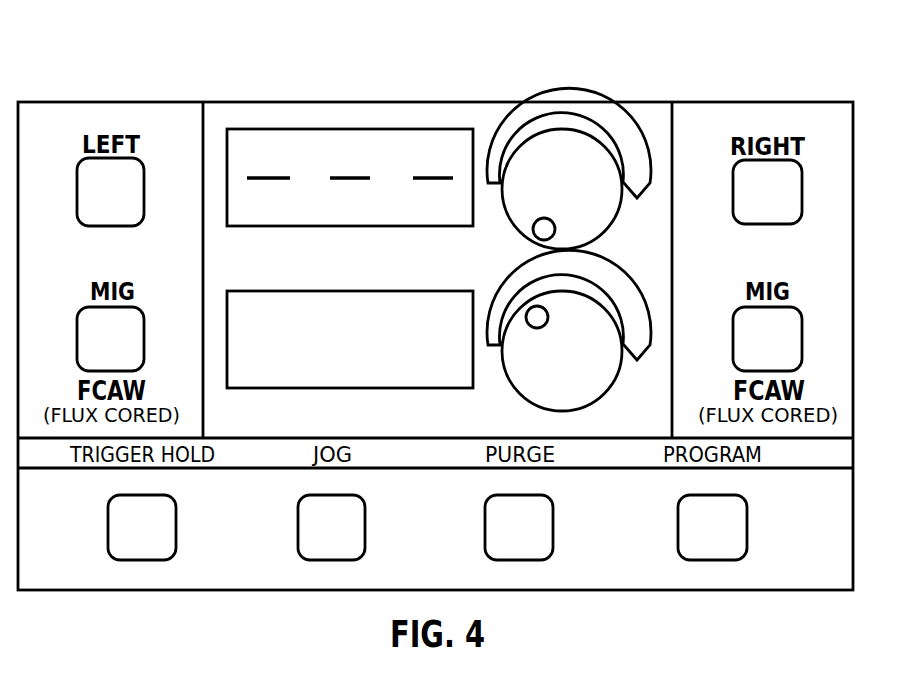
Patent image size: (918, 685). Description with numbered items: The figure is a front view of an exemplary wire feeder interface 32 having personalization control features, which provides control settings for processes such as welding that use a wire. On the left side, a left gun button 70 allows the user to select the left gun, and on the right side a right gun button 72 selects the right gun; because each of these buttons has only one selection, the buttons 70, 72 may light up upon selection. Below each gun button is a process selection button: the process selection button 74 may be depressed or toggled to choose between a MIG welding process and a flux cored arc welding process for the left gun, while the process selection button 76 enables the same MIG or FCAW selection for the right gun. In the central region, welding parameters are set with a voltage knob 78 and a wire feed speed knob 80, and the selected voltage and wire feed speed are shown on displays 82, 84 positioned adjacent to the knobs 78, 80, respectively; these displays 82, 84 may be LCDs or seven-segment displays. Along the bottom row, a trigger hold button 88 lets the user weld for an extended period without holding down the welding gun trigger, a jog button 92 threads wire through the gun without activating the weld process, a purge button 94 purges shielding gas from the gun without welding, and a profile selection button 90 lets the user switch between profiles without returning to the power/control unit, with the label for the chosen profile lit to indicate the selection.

The wire feeder interface 32 is at (434, 52).
The left gun button 70 is at (140, 160).
The right gun button 72 is at (765, 224).
The process selection button 74 is at (140, 307).
The process selection button 76 is at (795, 307).
The voltage knob 78 is at (603, 232).
The wire feed speed knob 80 is at (603, 394).
The display 82 is at (403, 228).
The display 84 is at (346, 290).
The trigger hold button 88 is at (176, 528).
The profile selection button 90 is at (747, 540).
The jog button 92 is at (365, 528).
The purge button 94 is at (553, 528).